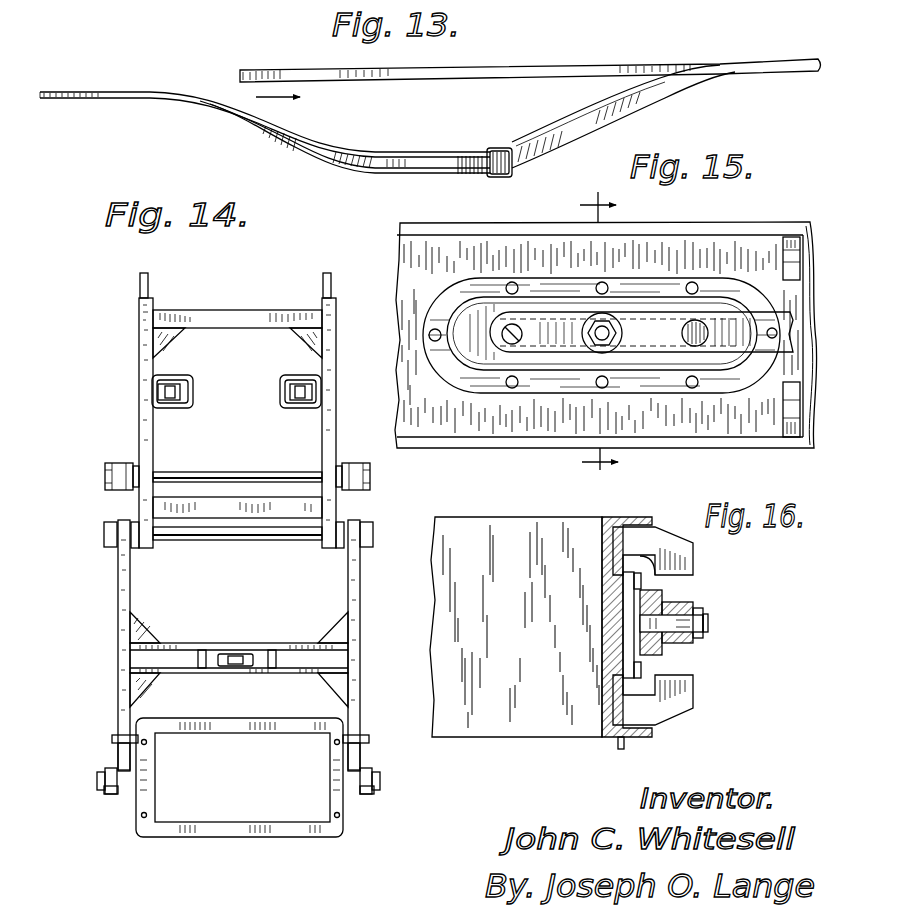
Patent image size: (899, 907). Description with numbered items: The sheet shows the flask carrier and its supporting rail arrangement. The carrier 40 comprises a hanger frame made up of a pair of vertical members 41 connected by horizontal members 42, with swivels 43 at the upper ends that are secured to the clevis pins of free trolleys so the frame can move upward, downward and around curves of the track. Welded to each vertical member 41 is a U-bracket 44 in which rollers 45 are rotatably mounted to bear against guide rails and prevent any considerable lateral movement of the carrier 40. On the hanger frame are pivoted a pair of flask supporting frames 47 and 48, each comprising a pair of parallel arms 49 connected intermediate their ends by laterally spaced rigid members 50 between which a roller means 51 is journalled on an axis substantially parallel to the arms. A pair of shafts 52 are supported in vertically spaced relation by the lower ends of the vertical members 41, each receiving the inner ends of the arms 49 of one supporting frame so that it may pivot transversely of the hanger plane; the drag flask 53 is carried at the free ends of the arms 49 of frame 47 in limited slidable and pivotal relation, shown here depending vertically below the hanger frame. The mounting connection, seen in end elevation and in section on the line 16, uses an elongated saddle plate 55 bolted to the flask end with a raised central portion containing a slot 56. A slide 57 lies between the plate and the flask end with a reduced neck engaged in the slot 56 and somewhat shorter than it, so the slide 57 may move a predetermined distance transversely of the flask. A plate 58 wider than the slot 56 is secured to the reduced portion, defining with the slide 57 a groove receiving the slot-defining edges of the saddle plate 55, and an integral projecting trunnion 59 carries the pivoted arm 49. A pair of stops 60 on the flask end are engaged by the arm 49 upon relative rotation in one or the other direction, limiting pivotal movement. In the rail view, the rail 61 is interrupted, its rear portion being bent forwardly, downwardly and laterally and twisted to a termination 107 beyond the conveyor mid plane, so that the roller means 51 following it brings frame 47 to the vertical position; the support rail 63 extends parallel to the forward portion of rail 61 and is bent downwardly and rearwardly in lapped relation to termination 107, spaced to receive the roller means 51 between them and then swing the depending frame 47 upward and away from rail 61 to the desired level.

In FIG. 13, the rail 61 is at (92, 90).
In FIG. 13, the support rail 63 is at (612, 108).
In FIG. 13, the termination 107 is at (494, 148).
In FIG. 14, the carrier 40 is at (229, 410).
In FIG. 14, the vertical members 41 is at (139, 352).
In FIG. 14, the horizontal members 42 is at (243, 326).
In FIG. 14, the swivels 43 is at (150, 287).
In FIG. 14, the U-bracket 44 is at (178, 378).
In FIG. 14, the rollers 45 is at (180, 400).
In FIG. 14, the flask supporting frame 47 is at (118, 612).
In FIG. 14, the flask supporting frame 48 is at (120, 462).
In FIG. 14, the arms 49 is at (355, 470).
In FIG. 15, the arms 49 is at (737, 352).
In FIG. 16, the arms 49 is at (695, 608).
In FIG. 14, the rigid members 50 is at (185, 672).
In FIG. 14, the roller means 51 is at (252, 655).
In FIG. 14, the shafts 52 is at (212, 478).
In FIG. 14, the drag flask 53 is at (238, 838).
In FIG. 15, the drag flask 53 is at (503, 438).
In FIG. 16, the drag flask 53 is at (522, 727).
In FIG. 15, the saddle plate 55 is at (632, 300).
In FIG. 16, the saddle plate 55 is at (655, 590).
In FIG. 15, the slot 56 is at (478, 322).
In FIG. 16, the slide 57 is at (660, 645).
In FIG. 14, the plate 58 is at (130, 795).
In FIG. 15, the plate 58 is at (553, 352).
In FIG. 16, the plate 58 is at (665, 607).
In FIG. 16, the trunnion 59 is at (700, 640).
In FIG. 14, the stops 60 is at (115, 737).
In FIG. 15, the stops 60 is at (783, 262).
In FIG. 16, the stops 60 is at (665, 548).
In FIG. 15, the section line 16— 16 is at (599, 332).